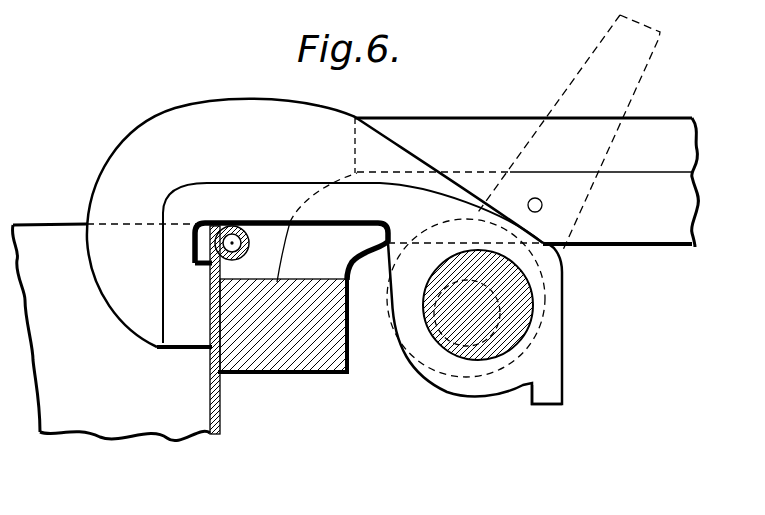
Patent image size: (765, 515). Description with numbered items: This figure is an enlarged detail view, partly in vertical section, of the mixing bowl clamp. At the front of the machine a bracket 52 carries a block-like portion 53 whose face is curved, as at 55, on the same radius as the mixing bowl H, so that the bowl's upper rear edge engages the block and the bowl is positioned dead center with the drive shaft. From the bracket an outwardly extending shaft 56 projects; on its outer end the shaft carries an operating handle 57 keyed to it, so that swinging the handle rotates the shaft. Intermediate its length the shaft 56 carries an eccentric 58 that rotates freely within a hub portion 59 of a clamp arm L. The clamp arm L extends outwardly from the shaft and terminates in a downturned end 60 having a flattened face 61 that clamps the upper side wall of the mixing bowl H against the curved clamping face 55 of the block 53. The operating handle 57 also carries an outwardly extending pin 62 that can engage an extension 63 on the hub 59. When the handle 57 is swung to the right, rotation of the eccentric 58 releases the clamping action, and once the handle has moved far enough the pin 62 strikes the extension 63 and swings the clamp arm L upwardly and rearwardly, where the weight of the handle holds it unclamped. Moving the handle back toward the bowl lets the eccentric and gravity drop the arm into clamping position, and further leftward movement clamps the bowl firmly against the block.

The clamp arm L is at (393, 221).
The mixing bowl H is at (150, 425).
The bracket 52 is at (336, 273).
The block-like portion 53 is at (310, 373).
The curved face 55 is at (227, 375).
The shaft 56 is at (463, 337).
The operating handle 57 is at (631, 71).
The eccentric 58 is at (513, 313).
The hub portion 59 is at (408, 330).
The downturned end 60 is at (143, 323).
The flattened face 61 is at (203, 335).
The pin 62 is at (542, 202).
The extension 63 is at (553, 410).